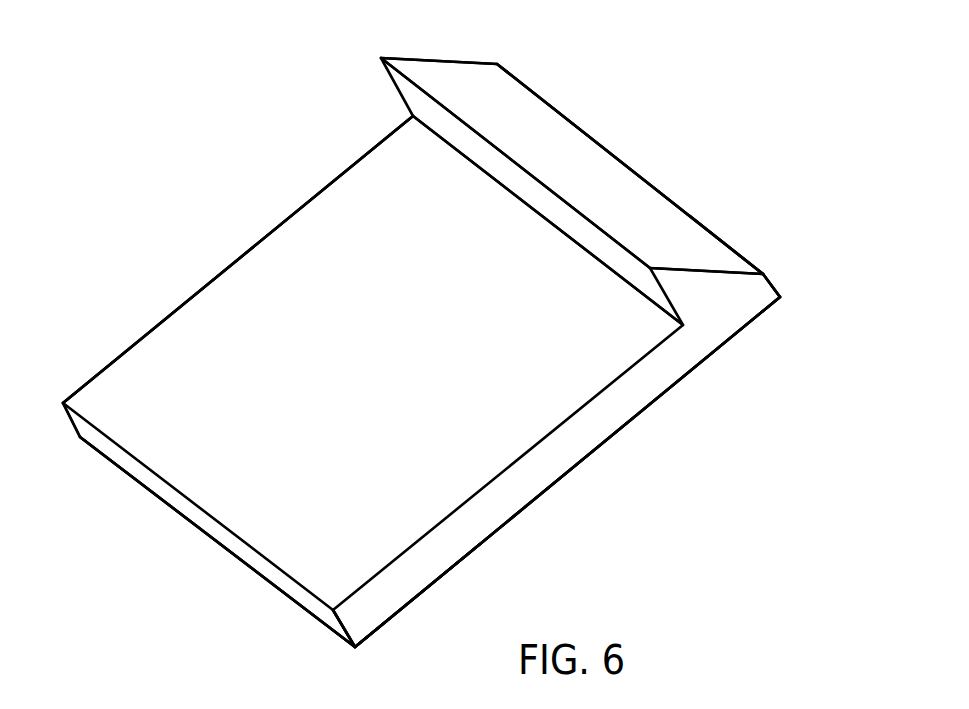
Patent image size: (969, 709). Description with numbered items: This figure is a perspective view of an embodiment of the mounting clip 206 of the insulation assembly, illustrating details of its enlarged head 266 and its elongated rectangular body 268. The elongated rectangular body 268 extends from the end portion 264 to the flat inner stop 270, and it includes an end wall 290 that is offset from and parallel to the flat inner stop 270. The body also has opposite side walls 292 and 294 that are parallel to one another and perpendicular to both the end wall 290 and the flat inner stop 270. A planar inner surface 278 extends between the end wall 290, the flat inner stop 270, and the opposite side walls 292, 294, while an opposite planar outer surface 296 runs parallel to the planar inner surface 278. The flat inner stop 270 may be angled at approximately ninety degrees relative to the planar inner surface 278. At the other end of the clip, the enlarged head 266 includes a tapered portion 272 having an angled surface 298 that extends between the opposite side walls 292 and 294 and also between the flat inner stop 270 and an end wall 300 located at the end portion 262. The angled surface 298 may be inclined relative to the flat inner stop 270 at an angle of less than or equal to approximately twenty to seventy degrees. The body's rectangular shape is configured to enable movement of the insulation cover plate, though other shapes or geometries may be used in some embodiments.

The mounting clip 206 is at (680, 84).
The end portion 262 is at (774, 284).
The end portion 264 is at (218, 539).
The enlarged head 266 is at (737, 185).
The elongated rectangular body 268 is at (551, 473).
The flat inner stop 270 is at (638, 272).
The tapered portion 272 is at (619, 176).
The planar inner surface 278 is at (192, 329).
The end wall 290 is at (148, 478).
The side wall 292 is at (236, 256).
The side wall 294 is at (402, 588).
The planar outer surface 296 is at (623, 430).
The angled surface 298 is at (547, 113).
The end wall 300 is at (687, 212).